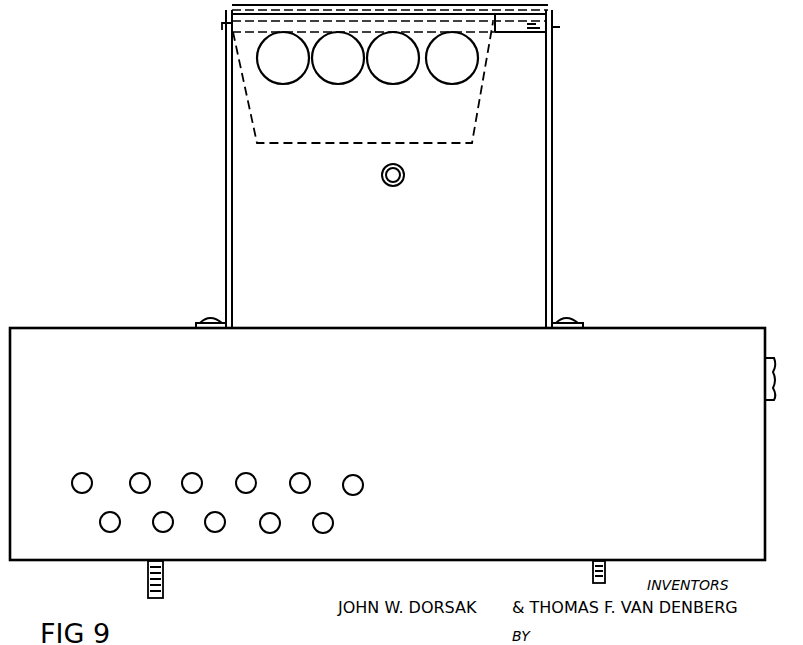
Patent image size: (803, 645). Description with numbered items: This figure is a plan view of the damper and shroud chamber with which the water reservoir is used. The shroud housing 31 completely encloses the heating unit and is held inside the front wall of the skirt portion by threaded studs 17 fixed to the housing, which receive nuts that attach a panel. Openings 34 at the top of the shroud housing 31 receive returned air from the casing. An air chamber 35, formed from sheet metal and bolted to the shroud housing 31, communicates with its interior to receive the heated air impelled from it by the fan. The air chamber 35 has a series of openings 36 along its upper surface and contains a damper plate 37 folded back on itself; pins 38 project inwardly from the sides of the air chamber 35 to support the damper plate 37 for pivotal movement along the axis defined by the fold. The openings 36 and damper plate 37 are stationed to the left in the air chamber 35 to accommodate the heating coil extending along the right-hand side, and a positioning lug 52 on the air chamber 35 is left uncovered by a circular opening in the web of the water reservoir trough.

The shroud housing 31 is at (704, 367).
The openings 34 is at (306, 481).
The threaded studs 17 is at (163, 586).
The air chamber 35 is at (512, 258).
The pins 38 is at (222, 27).
The damper plate 37 is at (262, 97).
The openings 36 is at (435, 78).
The positioning lug 52 is at (404, 178).